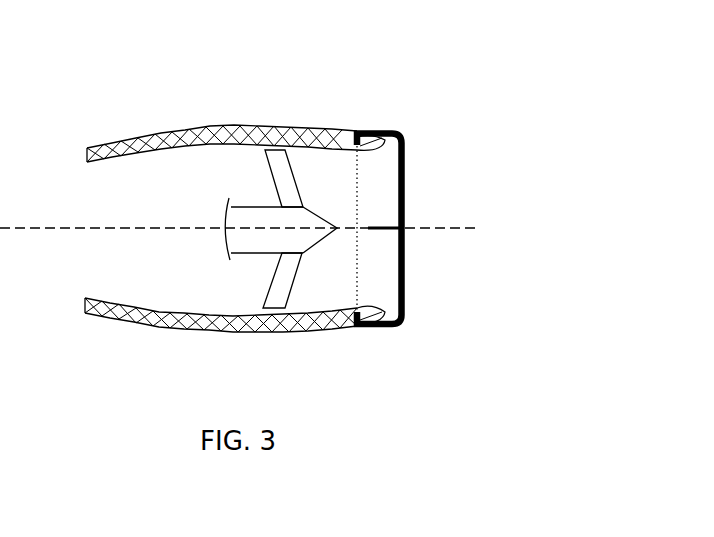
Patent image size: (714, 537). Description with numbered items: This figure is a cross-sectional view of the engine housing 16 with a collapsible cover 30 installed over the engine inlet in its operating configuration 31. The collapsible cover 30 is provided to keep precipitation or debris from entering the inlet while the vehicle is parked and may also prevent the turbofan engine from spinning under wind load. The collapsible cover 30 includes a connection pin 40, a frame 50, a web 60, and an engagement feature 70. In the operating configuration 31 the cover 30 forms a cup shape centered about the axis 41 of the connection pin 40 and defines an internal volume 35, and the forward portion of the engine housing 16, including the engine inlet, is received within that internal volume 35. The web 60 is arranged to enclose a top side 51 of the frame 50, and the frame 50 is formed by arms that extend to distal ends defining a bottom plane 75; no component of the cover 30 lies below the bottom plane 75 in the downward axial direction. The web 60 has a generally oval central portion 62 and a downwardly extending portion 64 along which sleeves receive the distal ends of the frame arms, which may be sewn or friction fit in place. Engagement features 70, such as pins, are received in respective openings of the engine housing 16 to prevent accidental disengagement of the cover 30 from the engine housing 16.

The engine housing 16 is at (122, 318).
The collapsible cover 30 is at (468, 173).
The operating configuration 31 is at (550, 193).
The internal volume 35 is at (393, 206).
The connection pin 40 is at (380, 232).
The axis 41 is at (475, 228).
The frame 50 is at (405, 150).
The top side 51 is at (445, 145).
The web 60 is at (415, 317).
The central portion 62 is at (415, 283).
The downwardly extending portion 64 is at (375, 338).
The engagement feature 70 is at (343, 137).
The bottom plane 75 is at (355, 283).